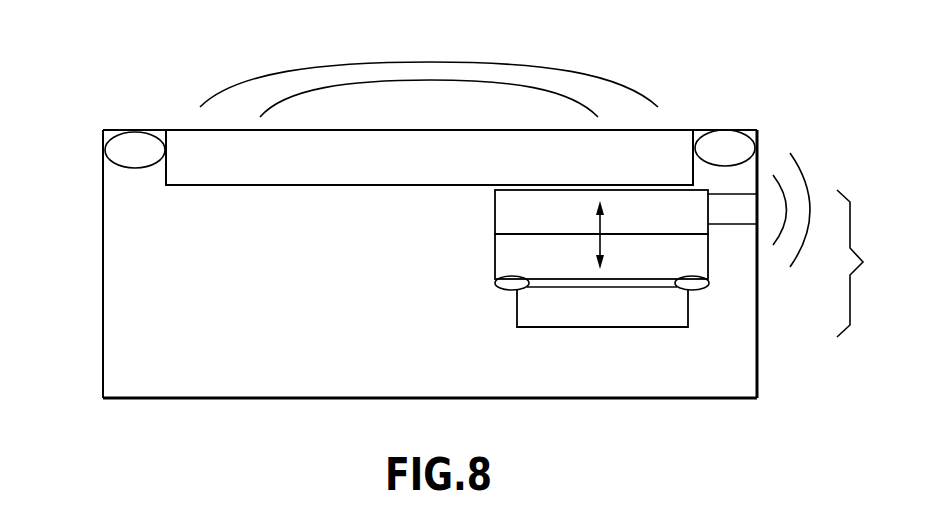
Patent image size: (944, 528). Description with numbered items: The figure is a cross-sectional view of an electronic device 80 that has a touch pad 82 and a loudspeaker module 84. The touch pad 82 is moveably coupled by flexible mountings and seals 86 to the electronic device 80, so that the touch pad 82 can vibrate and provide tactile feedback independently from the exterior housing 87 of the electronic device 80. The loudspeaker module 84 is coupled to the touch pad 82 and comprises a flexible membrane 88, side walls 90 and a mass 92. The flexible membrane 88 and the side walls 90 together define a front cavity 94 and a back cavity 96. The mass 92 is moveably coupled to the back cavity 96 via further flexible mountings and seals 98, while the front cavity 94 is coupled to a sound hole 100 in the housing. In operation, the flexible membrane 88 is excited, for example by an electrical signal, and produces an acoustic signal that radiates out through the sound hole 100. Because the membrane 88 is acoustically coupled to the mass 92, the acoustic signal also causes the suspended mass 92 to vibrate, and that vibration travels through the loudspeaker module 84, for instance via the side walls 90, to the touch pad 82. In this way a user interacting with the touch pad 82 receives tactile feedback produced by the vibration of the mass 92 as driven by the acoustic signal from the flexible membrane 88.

The electronic device 80 is at (86, 108).
The touch pad 82 is at (182, 147).
The loudspeaker module 84 is at (870, 263).
The flexible mountings and seals 86 is at (135, 170).
The exterior housing 87 is at (103, 348).
The flexible membrane 88 is at (680, 235).
The side walls 90 is at (567, 237).
The mass 92 is at (625, 330).
The front cavity 94 is at (500, 226).
The back cavity 96 is at (503, 268).
The flexible mountings and seals 98 is at (512, 292).
The sound hole 100 is at (737, 207).